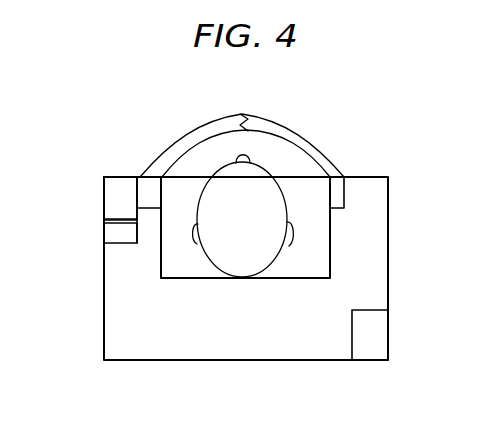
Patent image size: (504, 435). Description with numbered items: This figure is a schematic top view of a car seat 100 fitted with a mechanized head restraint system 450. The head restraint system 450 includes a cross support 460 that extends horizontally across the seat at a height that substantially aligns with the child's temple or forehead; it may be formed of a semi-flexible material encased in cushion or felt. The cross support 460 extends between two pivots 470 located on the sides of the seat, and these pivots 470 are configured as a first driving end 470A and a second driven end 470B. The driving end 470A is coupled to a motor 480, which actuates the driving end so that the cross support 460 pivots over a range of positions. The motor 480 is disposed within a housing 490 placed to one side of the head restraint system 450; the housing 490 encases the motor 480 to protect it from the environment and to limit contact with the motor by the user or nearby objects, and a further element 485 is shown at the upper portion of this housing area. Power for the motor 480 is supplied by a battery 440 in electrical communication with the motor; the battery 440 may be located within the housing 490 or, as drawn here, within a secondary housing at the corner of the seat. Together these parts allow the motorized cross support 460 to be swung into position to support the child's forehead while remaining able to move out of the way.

The head-mounted display device 100 is at (194, 388).
The battery 440 is at (373, 335).
The mechanized head restraint system 450 is at (320, 113).
The cross support 460 is at (210, 128).
The pivots 470 is at (294, 161).
The first driving end 470A is at (152, 178).
The second driven end 470B is at (343, 188).
The motor 480 is at (110, 232).
The upper side housing 485 is at (140, 177).
The housing 490 is at (92, 196).